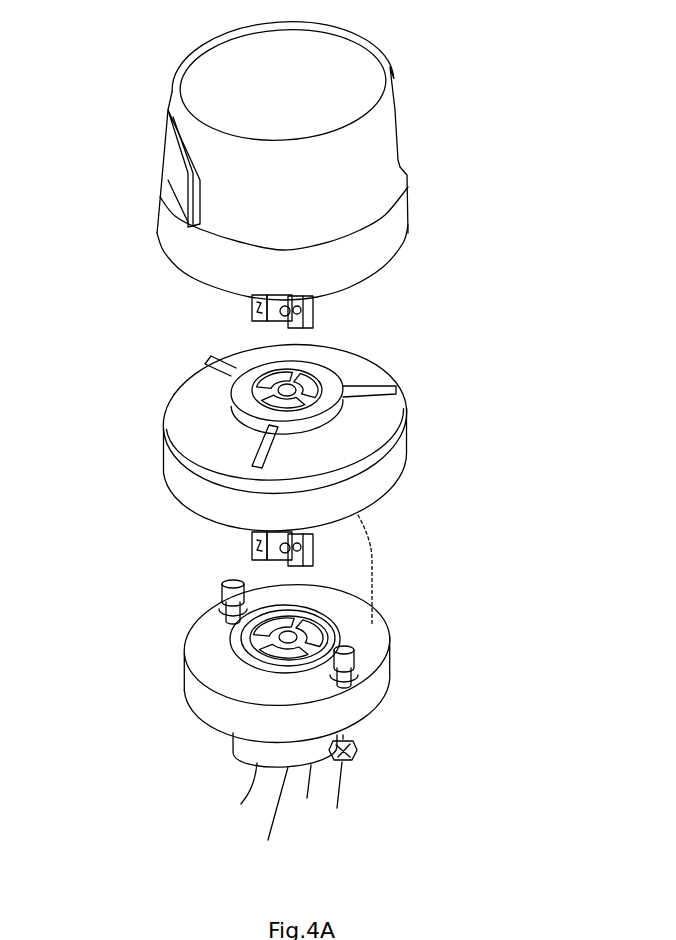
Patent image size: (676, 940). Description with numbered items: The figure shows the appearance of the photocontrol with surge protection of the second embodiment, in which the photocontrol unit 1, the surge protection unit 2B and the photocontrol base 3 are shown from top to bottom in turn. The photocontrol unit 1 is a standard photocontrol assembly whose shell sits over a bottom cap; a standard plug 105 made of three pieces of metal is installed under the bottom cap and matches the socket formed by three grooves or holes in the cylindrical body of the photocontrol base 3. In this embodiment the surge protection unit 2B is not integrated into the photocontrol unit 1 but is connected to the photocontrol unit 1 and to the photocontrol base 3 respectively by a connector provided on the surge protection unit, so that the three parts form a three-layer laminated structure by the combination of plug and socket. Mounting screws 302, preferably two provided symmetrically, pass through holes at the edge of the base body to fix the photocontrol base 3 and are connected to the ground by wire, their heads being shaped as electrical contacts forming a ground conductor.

The photocontrol unit 1 is at (383, 237).
The plug 105 is at (252, 310).
The surge protection unit 2B is at (367, 485).
The photocontrol base 3 is at (360, 692).
The mounting screw 302 is at (227, 585).